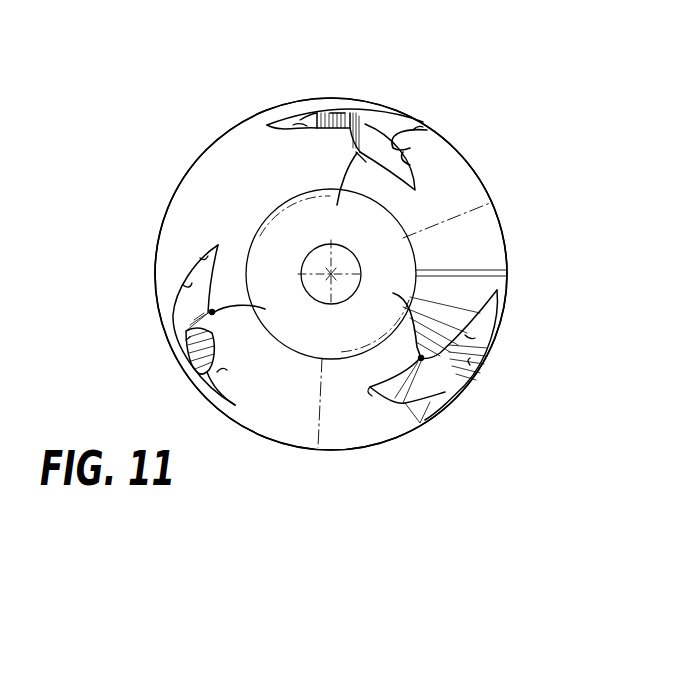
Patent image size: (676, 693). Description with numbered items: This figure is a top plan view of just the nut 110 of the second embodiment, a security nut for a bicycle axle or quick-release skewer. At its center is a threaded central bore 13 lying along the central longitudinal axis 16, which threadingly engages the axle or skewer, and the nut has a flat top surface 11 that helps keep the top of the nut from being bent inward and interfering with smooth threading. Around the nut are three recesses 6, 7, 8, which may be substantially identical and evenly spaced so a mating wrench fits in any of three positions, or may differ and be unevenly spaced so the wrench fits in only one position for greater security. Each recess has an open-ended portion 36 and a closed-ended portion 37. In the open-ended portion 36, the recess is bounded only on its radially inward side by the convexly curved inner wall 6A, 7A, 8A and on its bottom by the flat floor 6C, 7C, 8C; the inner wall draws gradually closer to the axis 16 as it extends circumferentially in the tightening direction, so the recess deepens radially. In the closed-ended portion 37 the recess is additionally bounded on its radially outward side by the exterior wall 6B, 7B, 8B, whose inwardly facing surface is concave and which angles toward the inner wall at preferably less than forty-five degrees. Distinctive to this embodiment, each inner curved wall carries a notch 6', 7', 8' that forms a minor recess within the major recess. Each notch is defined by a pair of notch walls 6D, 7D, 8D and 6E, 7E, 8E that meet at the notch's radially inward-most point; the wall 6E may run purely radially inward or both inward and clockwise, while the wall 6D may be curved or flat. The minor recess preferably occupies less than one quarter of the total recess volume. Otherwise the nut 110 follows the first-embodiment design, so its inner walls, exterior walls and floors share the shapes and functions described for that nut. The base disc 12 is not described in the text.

The nut 110 is at (229, 110).
The recess 6 is at (345, 111).
The recess 7 is at (448, 372).
The recess 8 is at (150, 325).
The inner curved wall 6A is at (310, 128).
The exterior wall 6B is at (403, 152).
The floor 6C is at (423, 127).
The notch wall 6D is at (340, 110).
The notch wall 6E is at (356, 153).
The notch 6' is at (336, 193).
The inner curved wall 7A is at (468, 335).
The exterior wall 7B is at (392, 395).
The floor 7C is at (414, 405).
The notch wall 7D is at (470, 365).
The notch wall 7E is at (421, 358).
The notch 7' is at (399, 318).
The inner curved wall 8A is at (220, 370).
The exterior wall 8B is at (203, 258).
The floor 8C is at (185, 283).
The notch wall 8D is at (186, 348).
The notch wall 8E is at (215, 308).
The notch 8' is at (260, 312).
The flat top surface 11 is at (375, 243).
The base disc 12 is at (277, 392).
The threaded central bore 13 is at (357, 298).
The central longitudinal axis 16 is at (331, 273).
The open-ended portion 36 is at (315, 112).
The closed-ended portion 37 is at (427, 130).